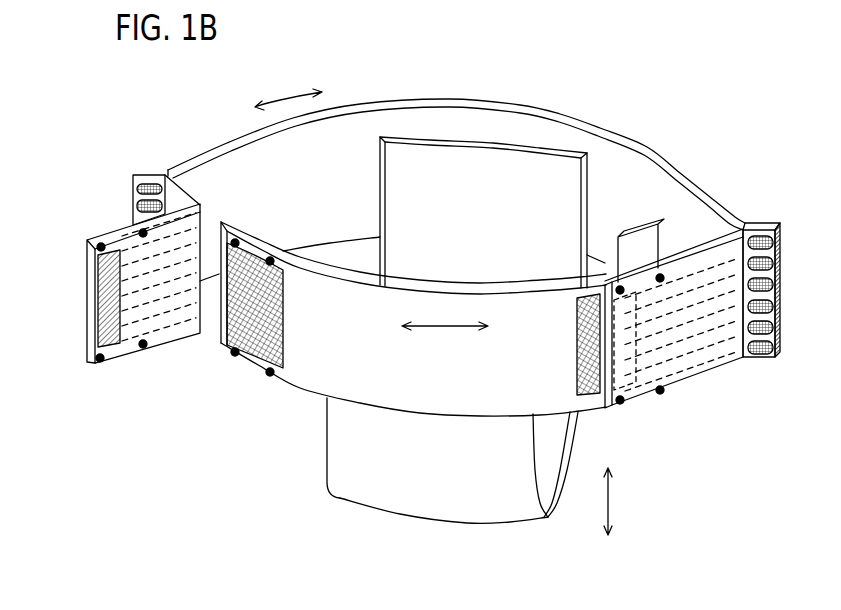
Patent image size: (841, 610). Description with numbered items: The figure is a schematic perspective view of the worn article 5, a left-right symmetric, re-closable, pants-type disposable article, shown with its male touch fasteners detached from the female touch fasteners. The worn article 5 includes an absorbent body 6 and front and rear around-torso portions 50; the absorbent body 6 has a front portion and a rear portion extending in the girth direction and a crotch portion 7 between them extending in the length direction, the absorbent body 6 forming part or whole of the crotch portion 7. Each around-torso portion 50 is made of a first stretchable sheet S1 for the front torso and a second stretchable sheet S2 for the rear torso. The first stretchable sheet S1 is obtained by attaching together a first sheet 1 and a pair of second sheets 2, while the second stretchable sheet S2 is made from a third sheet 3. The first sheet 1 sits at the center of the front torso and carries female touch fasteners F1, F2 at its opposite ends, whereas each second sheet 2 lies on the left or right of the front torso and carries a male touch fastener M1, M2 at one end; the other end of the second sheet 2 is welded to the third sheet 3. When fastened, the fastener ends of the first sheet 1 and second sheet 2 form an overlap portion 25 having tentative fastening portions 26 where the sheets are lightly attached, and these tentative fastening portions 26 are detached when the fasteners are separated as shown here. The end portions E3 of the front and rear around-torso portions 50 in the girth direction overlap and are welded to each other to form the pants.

The worn article 5 is at (669, 112).
The around-torso portion 50 is at (423, 264).
The third sheet 3 is at (456, 139).
The second stretchable sheet S2 is at (478, 125).
The first sheet 1 is at (403, 309).
The first stretchable sheet S1 is at (422, 401).
The second sheet 2 is at (180, 340).
The end portion E3 is at (150, 174).
The tentative fastening portion 26 is at (143, 231).
The female touch fastener F1 is at (283, 338).
The female touch fastener F2 is at (577, 358).
The male touch fastener M1 is at (598, 414).
The male touch fastener M2 is at (98, 292).
The overlap portion 25 is at (634, 228).
The absorbent body 6 is at (452, 496).
The crotch portion 7 is at (470, 522).